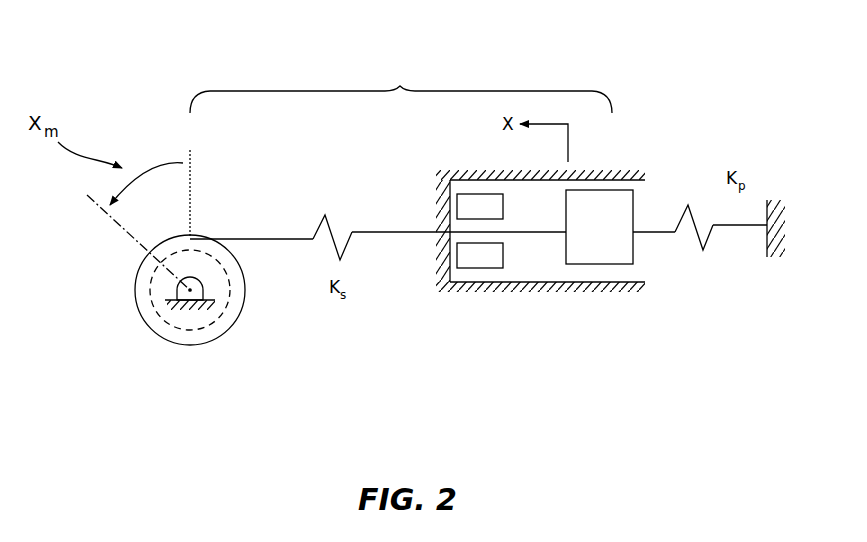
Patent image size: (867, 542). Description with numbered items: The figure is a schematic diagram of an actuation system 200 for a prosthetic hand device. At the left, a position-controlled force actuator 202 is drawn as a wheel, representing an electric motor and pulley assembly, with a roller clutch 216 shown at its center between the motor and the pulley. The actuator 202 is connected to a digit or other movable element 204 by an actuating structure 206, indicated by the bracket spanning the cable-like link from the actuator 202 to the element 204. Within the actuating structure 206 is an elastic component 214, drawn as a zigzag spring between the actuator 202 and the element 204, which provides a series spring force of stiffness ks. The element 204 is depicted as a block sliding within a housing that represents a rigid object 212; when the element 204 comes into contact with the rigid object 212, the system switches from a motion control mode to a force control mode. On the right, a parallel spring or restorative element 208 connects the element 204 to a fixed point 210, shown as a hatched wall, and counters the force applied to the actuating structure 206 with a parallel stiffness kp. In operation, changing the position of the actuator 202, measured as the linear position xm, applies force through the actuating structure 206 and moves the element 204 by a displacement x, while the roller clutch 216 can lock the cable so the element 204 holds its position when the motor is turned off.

The actuation system 200 is at (385, 412).
The position-controlled force actuator 202 is at (188, 352).
The movable element 204 is at (642, 196).
The actuating structure 206 is at (400, 86).
The restorative element 208 is at (699, 258).
The fixed point 210 is at (797, 200).
The rigid object 212 is at (480, 272).
The elastic component 214 is at (312, 210).
The roller clutch 216 is at (154, 288).